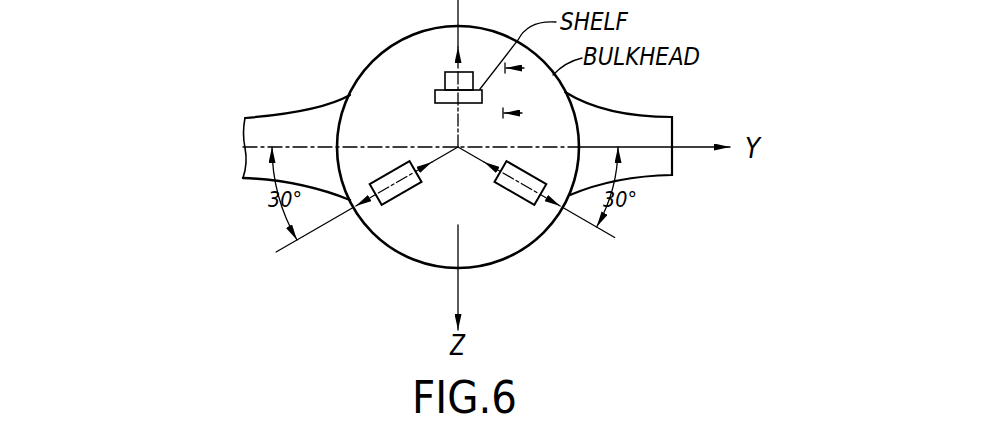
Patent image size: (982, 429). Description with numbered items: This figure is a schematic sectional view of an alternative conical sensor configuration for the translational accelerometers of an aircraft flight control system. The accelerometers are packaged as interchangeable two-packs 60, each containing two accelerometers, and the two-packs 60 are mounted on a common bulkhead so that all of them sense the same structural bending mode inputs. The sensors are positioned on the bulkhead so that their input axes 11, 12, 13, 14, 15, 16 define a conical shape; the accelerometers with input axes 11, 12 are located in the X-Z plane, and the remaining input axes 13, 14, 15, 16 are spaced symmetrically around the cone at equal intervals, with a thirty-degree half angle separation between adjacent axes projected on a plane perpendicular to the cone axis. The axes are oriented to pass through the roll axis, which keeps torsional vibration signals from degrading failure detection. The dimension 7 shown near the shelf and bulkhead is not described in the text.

The bulkhead offset dimension 7 is at (524, 95).
The two-pack 60 is at (445, 79).
The accelerometer input axis 11 is at (445, 34).
The accelerometer input axis 12 is at (475, 89).
The accelerometer input axis 13 is at (487, 152).
The accelerometer input axis 14 is at (354, 222).
The accelerometer input axis 15 is at (438, 168).
The accelerometer input axis 16 is at (559, 220).